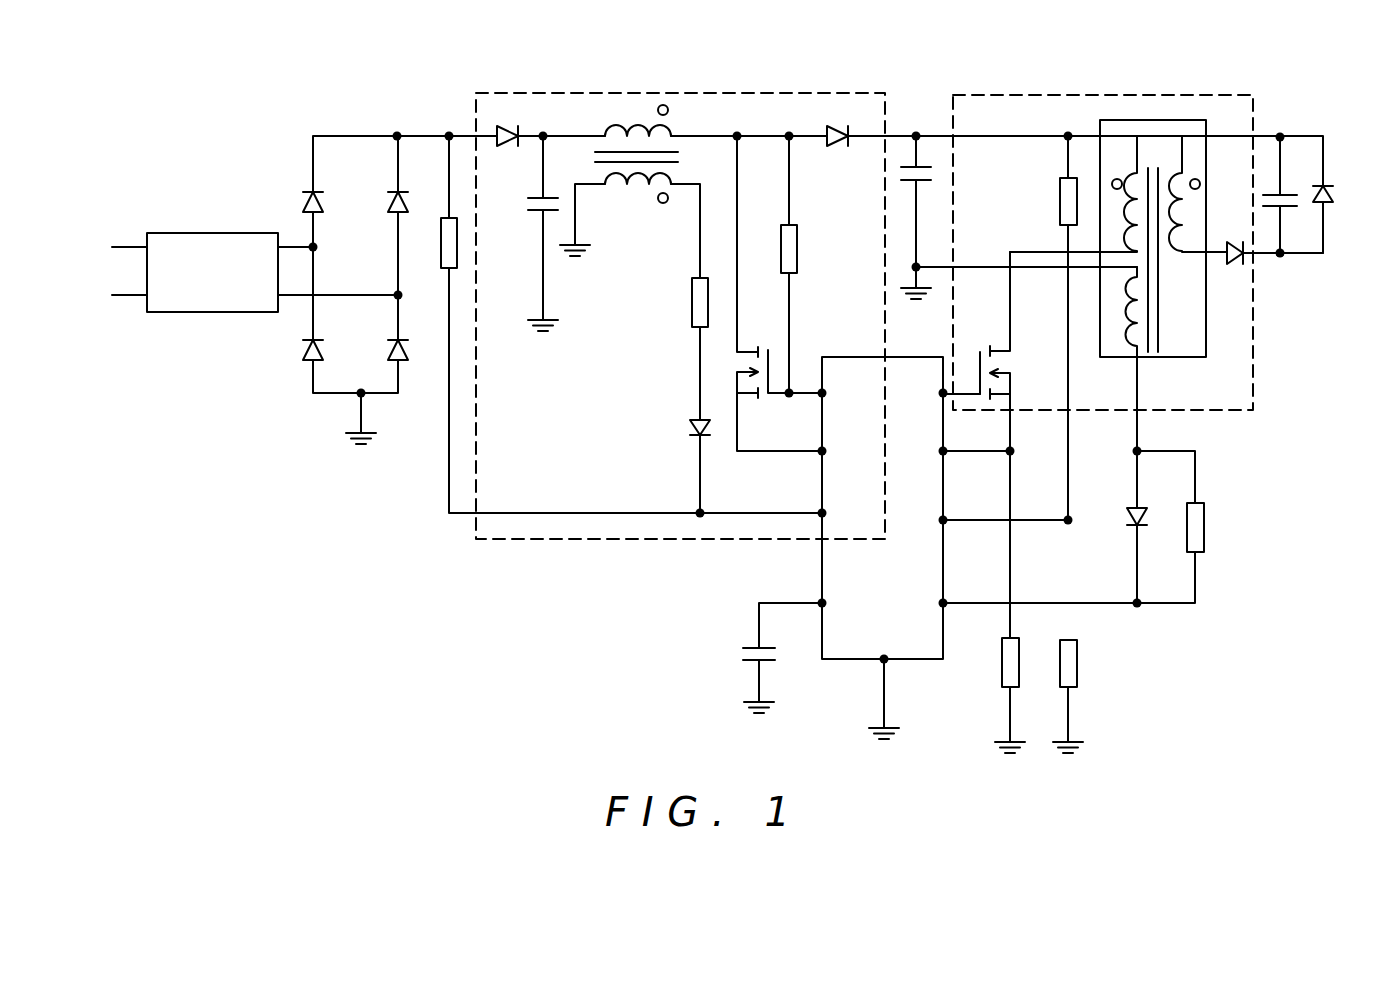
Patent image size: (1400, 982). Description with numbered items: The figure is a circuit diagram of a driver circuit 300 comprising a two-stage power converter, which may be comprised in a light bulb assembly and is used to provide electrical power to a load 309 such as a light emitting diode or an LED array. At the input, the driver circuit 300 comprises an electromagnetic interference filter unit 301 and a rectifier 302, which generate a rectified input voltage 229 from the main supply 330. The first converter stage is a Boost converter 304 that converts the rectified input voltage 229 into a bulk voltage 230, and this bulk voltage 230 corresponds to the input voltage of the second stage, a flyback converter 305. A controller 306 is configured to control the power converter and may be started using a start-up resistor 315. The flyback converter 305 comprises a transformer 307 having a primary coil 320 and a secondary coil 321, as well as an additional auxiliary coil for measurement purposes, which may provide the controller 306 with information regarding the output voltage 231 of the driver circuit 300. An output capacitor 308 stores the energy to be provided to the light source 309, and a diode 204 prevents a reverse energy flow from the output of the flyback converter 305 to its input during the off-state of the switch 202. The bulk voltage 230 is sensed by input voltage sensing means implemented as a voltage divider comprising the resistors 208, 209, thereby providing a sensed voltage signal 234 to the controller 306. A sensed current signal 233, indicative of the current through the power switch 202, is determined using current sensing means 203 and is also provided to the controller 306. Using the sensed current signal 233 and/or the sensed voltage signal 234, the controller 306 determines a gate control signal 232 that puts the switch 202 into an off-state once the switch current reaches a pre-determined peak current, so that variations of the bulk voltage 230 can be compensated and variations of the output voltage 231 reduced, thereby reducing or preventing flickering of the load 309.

The driver circuit 300 is at (241, 106).
The main supply 330 is at (87, 303).
The electromagnetic interference (EMI) filter unit 301 is at (222, 313).
The rectifier 302 is at (360, 128).
The rectified input voltage 229 is at (423, 132).
The start-up resistor 315 is at (461, 242).
The Boost converter 304 is at (553, 540).
The controller 306 is at (837, 663).
The bulk voltage 230 is at (977, 140).
The resistor 208 is at (1060, 198).
The primary coil 320 is at (1125, 217).
The secondary coil 321 is at (1185, 217).
The transformer 307 is at (1206, 342).
The switch 202 is at (980, 353).
The gate control signal 232 is at (975, 398).
The sensed current signal 233 is at (987, 455).
The sensed voltage signal 234 is at (983, 523).
The current sensing means 203 is at (1003, 675).
The resistor 209 is at (1077, 647).
The diode 204 is at (1233, 275).
The flyback converter 305 is at (1130, 307).
The output voltage 231 is at (1300, 130).
The load 309 is at (1328, 205).
The output capacitor 308 is at (1283, 258).